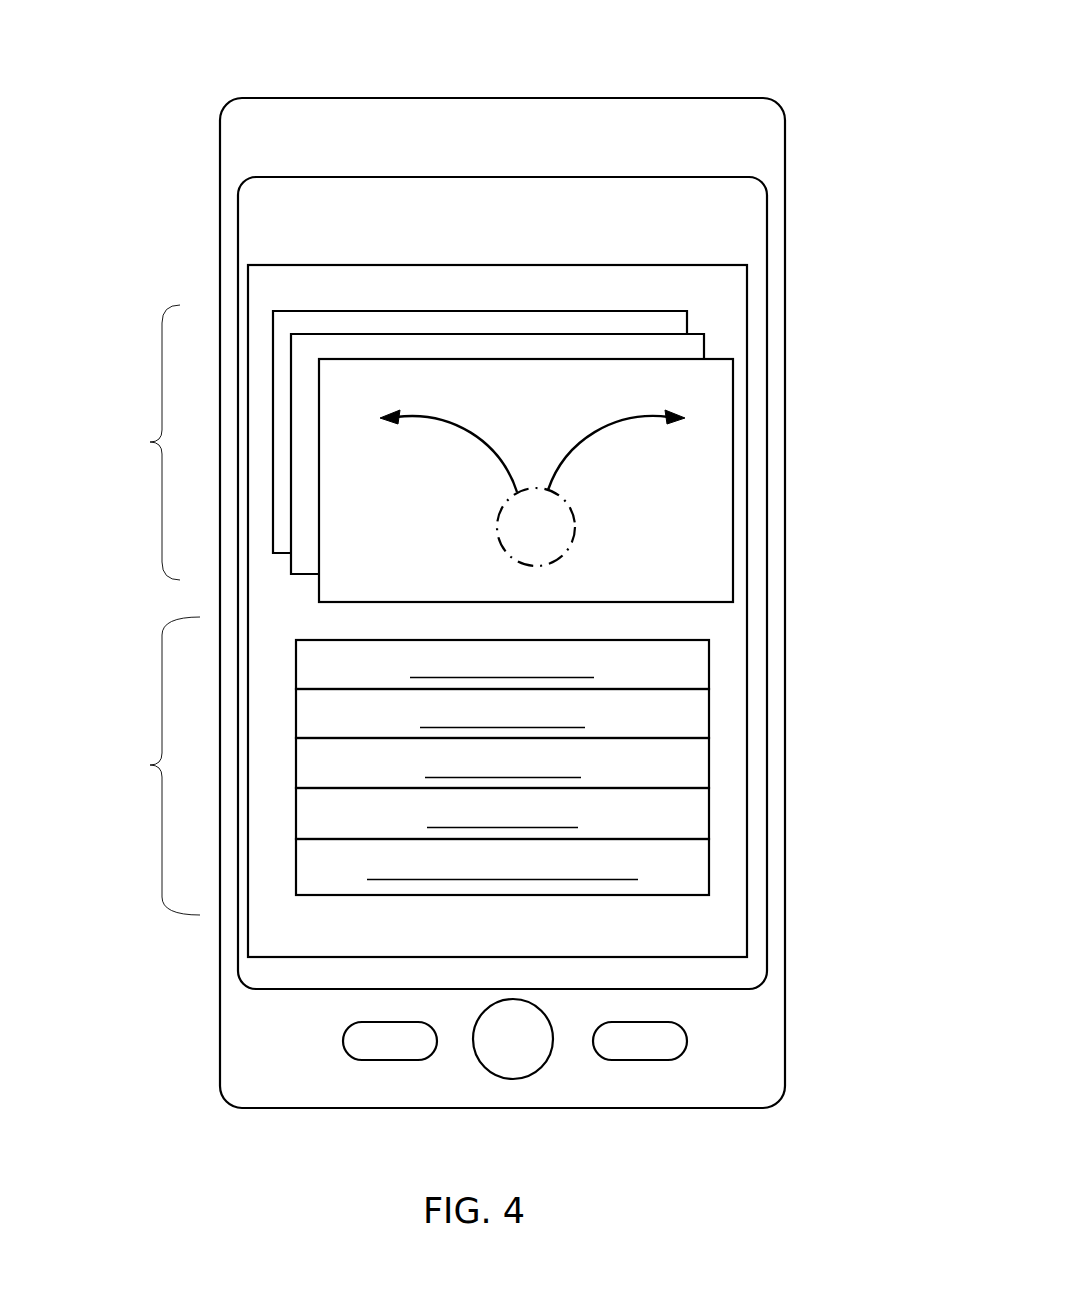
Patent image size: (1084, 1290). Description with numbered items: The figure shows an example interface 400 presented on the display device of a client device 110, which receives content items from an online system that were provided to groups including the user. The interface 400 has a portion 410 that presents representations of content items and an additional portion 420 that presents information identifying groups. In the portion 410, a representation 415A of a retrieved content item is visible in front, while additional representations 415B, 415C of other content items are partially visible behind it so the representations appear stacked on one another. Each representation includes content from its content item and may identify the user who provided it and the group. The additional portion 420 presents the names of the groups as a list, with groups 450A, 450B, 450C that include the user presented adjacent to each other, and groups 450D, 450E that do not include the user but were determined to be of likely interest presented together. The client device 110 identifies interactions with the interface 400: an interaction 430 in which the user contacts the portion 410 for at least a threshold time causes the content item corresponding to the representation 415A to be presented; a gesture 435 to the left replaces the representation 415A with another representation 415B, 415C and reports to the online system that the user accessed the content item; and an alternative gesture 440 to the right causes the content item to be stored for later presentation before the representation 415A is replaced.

The client device 110 is at (502, 98).
The interface 400 is at (747, 298).
The portion 410 is at (135, 442).
The representation 415A is at (717, 413).
The representation 415B is at (657, 332).
The representation 415C is at (311, 310).
The additional portion 420 is at (145, 766).
The interaction 430 is at (497, 526).
The gesture 435 is at (478, 432).
The alternative gesture 440 is at (618, 418).
The group 450A is at (709, 666).
The group 450B is at (709, 715).
The group 450C is at (709, 765).
The group 450D is at (709, 814).
The group 450E is at (709, 864).